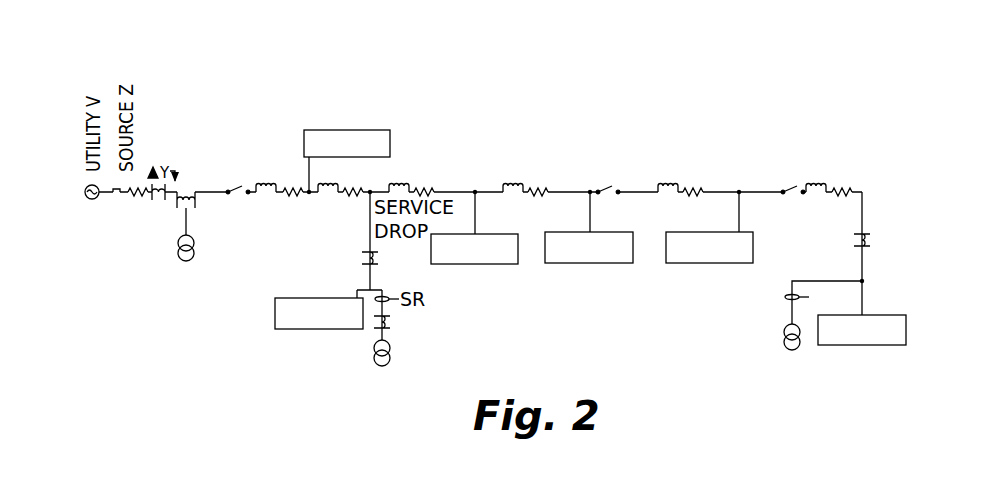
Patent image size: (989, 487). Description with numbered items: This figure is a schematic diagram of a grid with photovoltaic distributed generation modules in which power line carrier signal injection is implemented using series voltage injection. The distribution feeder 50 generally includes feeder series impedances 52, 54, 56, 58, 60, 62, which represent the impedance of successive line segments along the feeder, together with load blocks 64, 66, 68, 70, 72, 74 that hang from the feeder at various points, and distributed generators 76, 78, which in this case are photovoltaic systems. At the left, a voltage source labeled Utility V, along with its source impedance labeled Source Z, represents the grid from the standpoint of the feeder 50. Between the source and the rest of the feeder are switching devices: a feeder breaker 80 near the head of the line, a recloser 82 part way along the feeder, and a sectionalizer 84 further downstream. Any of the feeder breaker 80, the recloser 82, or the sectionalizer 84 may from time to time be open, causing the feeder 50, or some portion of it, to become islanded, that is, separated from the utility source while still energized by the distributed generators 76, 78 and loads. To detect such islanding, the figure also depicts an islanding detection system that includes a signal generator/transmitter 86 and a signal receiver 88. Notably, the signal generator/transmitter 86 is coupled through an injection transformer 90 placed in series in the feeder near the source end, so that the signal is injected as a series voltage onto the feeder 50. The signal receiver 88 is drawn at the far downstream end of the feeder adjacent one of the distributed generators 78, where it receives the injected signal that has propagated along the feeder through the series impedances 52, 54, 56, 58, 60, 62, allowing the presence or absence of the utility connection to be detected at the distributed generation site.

The distribution feeder 50 is at (492, 90).
The feeder series impedance 52 is at (287, 199).
The feeder series impedance 54 is at (350, 205).
The feeder series impedance 56 is at (426, 181).
The feeder series impedance 58 is at (522, 200).
The feeder series impedance 60 is at (691, 201).
The feeder series impedance 62 is at (862, 183).
The load block 64 is at (357, 122).
The load block 66 is at (294, 334).
The load block 68 is at (491, 269).
The load block 70 is at (592, 268).
The load block 72 is at (692, 268).
The load block 74 is at (858, 350).
The distributed generator 76 is at (400, 365).
The distributed generator 78 is at (781, 351).
The feeder breaker 80 is at (255, 57).
The recloser 82 is at (621, 134).
The sectionalizer 84 is at (786, 125).
The signal generator/transmitter 86 is at (184, 268).
The signal receiver 88 is at (815, 306).
The injection transformer 90 is at (188, 185).